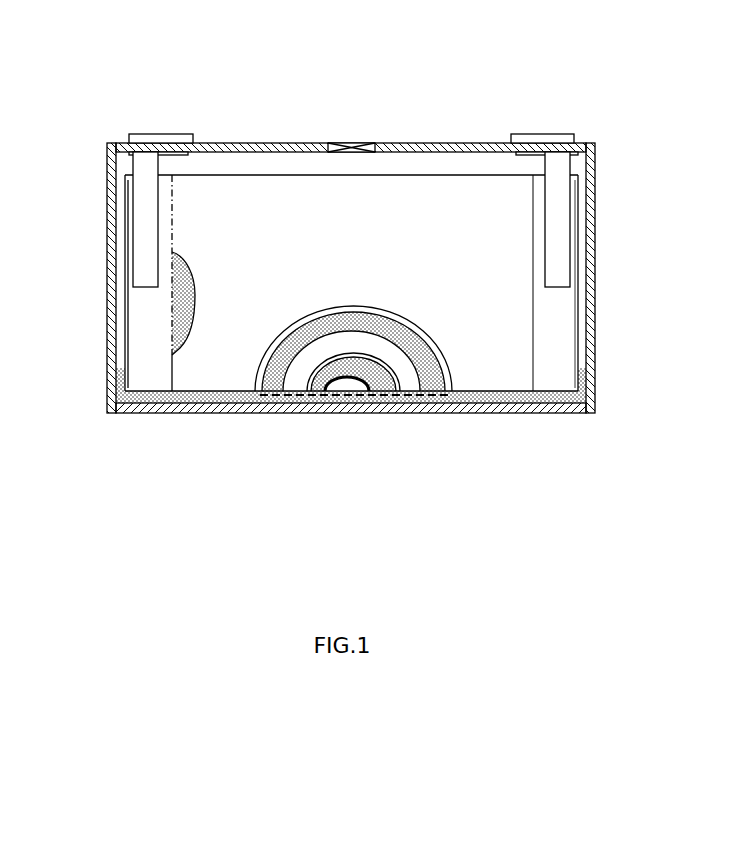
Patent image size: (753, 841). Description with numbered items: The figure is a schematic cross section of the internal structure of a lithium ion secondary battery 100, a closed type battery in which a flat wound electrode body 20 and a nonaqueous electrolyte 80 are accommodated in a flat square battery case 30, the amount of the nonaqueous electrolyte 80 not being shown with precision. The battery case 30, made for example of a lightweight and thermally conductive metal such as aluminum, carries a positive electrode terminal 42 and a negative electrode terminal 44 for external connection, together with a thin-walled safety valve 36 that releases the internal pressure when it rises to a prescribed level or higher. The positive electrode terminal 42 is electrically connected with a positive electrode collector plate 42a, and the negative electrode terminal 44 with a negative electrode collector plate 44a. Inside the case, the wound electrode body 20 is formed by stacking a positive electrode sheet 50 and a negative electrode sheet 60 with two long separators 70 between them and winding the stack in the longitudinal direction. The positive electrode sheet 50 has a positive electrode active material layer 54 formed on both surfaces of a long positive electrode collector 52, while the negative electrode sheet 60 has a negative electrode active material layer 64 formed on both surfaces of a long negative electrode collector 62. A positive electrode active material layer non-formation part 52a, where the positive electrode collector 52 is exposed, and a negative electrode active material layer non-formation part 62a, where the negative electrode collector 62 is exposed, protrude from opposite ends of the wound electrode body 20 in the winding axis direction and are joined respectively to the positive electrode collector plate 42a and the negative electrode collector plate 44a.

The lithium ion secondary battery 100 is at (358, 258).
The wound electrode body 20 is at (356, 298).
The battery case 30 is at (391, 250).
The safety valve 36 is at (361, 147).
The positive electrode terminal 42 is at (173, 134).
The positive electrode collector plate 42a is at (140, 212).
The negative electrode terminal 44 is at (550, 134).
The negative electrode collector plate 44a is at (567, 207).
The positive electrode sheet 50 is at (246, 336).
The positive electrode collector 52 is at (122, 310).
The positive electrode active material layer non-formation part 52a is at (132, 347).
The positive electrode active material layer 54 is at (195, 283).
The negative electrode sheet 60 is at (486, 336).
The negative electrode collector 62 is at (583, 310).
The negative electrode active material layer non-formation part 62a is at (567, 343).
The negative electrode active material layer 64 is at (325, 391).
The separator 70 is at (205, 353).
The nonaqueous electrolyte 80 is at (501, 403).